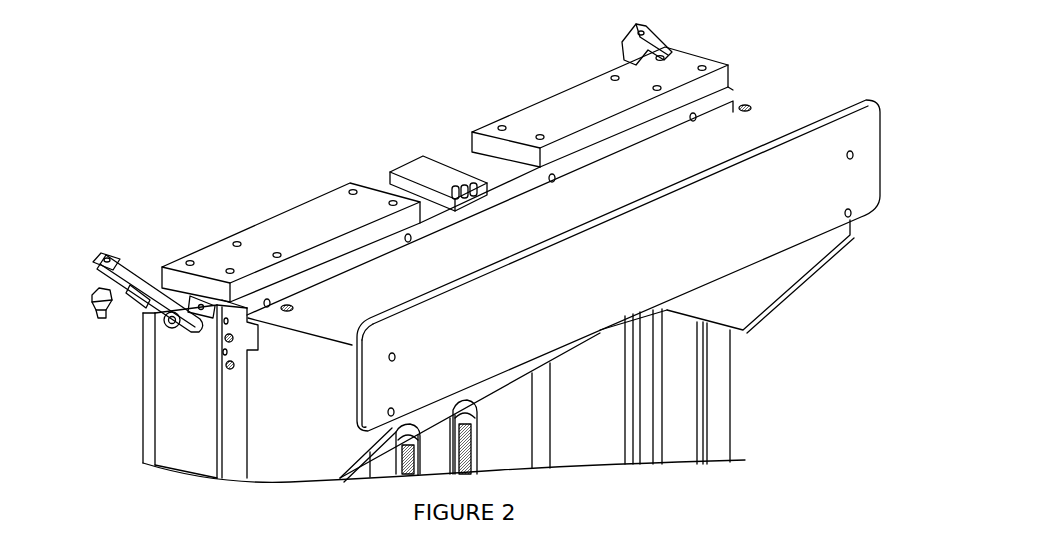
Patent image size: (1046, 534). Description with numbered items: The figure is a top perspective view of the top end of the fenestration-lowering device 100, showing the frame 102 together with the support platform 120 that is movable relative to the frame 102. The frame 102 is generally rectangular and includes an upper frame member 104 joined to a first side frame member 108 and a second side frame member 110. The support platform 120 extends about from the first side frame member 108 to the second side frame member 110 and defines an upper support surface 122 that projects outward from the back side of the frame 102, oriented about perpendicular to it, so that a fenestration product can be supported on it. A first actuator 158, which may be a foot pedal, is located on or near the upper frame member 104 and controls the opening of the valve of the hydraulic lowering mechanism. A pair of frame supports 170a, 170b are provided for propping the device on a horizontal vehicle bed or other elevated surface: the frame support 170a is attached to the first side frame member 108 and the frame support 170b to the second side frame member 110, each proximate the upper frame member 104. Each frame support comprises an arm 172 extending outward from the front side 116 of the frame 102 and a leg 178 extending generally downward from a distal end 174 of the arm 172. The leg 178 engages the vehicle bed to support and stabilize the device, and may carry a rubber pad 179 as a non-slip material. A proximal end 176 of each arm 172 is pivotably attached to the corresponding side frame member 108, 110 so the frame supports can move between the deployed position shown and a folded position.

The fenestration-lowering device 100 is at (830, 74).
The frame 102 is at (745, 411).
The upper frame member 104 is at (497, 173).
The first side frame member 108 is at (702, 388).
The second side frame member 110 is at (177, 457).
The front side 116 is at (137, 443).
The support platform 120 is at (583, 198).
The upper support surface 122 is at (748, 140).
The first actuator 158 is at (422, 167).
The frame support 170a is at (650, 50).
The frame support 170b is at (137, 307).
The arm 172 is at (128, 273).
The distal end 174 is at (97, 259).
The proximal end 176 is at (203, 312).
The leg 178 is at (93, 291).
The rubber pad 179 is at (100, 309).